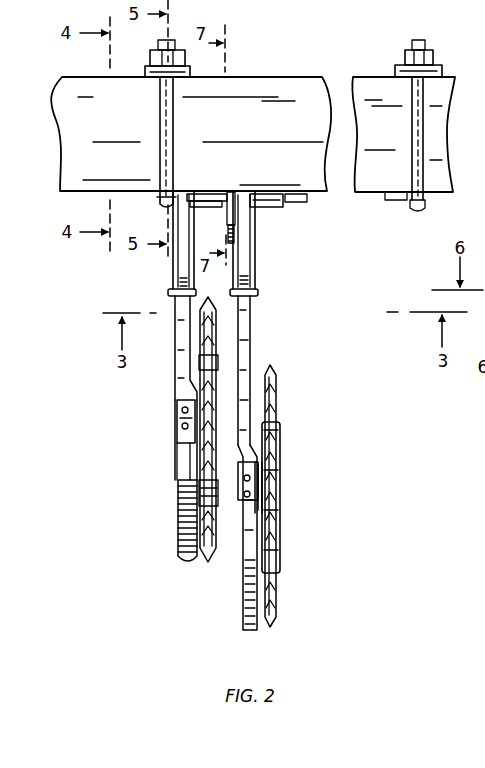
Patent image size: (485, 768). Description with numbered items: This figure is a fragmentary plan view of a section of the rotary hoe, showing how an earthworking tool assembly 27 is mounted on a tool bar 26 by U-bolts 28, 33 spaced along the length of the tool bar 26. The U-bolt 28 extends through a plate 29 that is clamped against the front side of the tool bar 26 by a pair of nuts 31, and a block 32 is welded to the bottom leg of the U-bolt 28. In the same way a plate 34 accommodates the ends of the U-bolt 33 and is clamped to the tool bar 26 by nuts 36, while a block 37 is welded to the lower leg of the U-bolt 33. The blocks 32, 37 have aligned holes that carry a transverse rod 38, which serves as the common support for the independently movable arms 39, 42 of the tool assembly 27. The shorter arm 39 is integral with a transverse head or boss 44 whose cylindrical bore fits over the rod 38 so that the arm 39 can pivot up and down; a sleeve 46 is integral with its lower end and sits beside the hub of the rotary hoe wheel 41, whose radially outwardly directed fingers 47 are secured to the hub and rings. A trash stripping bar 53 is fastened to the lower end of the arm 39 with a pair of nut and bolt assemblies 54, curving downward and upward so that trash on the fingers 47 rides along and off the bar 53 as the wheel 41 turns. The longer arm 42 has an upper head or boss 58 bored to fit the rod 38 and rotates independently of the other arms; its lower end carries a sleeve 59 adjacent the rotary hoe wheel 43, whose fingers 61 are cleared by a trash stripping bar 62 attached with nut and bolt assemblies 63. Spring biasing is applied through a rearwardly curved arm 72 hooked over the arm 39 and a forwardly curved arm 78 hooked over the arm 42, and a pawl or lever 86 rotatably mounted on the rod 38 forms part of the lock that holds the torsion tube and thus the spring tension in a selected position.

The tool bar 26 is at (270, 95).
The earthworking tool assembly 27 is at (127, 456).
The U-bolt 28 is at (176, 119).
The plate 29 is at (155, 74).
The nuts 31 is at (158, 52).
The block 32 is at (162, 207).
The U-bolt 33 is at (450, 112).
The plate 34 is at (397, 72).
The nuts 36 is at (430, 52).
The block 37 is at (417, 215).
The transverse rod 38 is at (302, 201).
The arm 39 is at (180, 335).
The rotary hoe wheel 41 is at (208, 570).
The arm 42 is at (245, 331).
The rotary hoe wheel 43 is at (287, 603).
The transverse head or boss 44 is at (200, 196).
The sleeve 46 is at (193, 440).
The fingers 47 is at (205, 536).
The trash stripping bar 53 is at (185, 482).
The nut and bolt assemblies 54 is at (182, 426).
The transverse upper head or boss 58 is at (278, 208).
The sleeve 59 is at (281, 490).
The fingers 61 is at (276, 390).
The trash stripping bar 62 is at (247, 568).
The nut and bolt assemblies 63 is at (241, 492).
The arm 72 is at (193, 247).
The arm 78 is at (256, 250).
The pawl or lever 86 is at (231, 194).